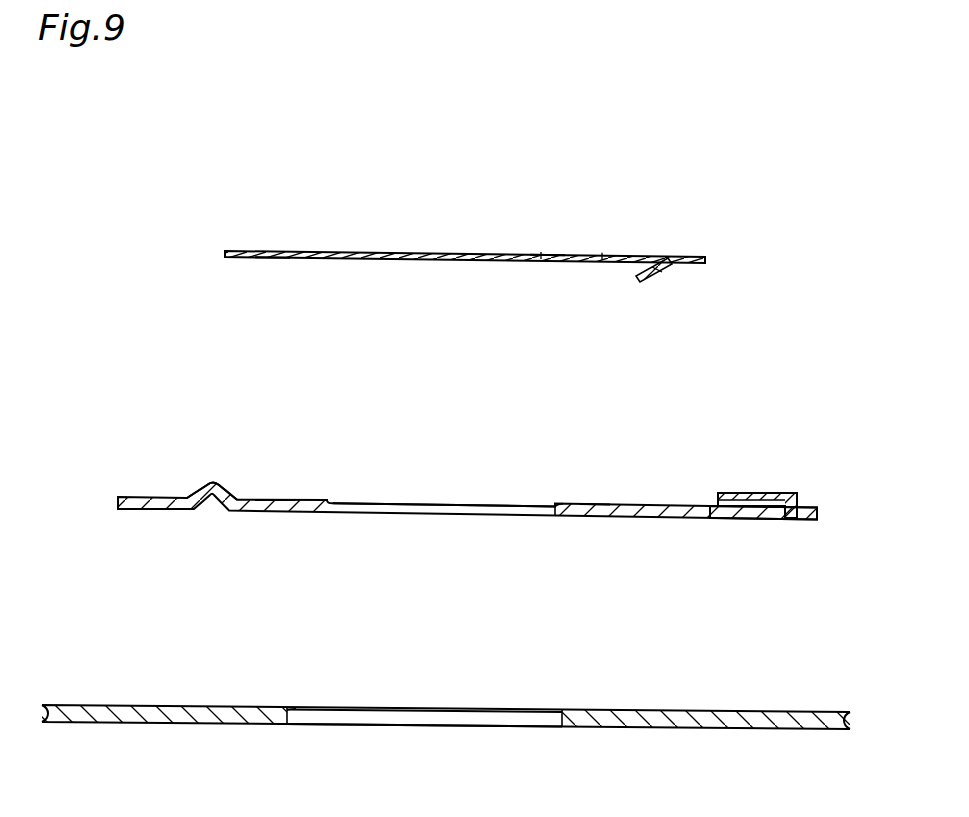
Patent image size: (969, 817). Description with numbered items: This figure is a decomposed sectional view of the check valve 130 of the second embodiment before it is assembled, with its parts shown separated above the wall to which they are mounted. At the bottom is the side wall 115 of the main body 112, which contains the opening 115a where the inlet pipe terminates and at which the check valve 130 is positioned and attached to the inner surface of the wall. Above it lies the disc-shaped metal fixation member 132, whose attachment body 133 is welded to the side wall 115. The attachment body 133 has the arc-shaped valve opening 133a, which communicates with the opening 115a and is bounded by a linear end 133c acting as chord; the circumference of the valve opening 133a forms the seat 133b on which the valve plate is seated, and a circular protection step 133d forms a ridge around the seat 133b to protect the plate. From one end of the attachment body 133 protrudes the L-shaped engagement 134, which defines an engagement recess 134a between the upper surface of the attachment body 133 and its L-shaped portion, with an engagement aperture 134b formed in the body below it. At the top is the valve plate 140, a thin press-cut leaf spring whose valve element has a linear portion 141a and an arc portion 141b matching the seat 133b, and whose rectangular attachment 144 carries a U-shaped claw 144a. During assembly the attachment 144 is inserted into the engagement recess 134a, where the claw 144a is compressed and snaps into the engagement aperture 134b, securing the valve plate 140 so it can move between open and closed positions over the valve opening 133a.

The check valve 130 is at (97, 200).
The valve plate 140 is at (247, 250).
The linear portion 141a is at (547, 257).
The arc portion 141b is at (270, 251).
The attachment 144 is at (690, 258).
The U-shaped claw 144a is at (660, 272).
The fixation member 132 is at (162, 497).
The attachment body 133 is at (593, 503).
The valve opening 133a is at (345, 503).
The seat 133b is at (272, 500).
The linear end 133c is at (567, 503).
The circular protection step 133d is at (200, 486).
The engagement 134 is at (730, 492).
The engagement recess 134a is at (715, 518).
The engagement aperture 134b is at (738, 518).
The side wall 115 is at (446, 673).
The main body 112 is at (155, 705).
The opening 115a is at (290, 709).